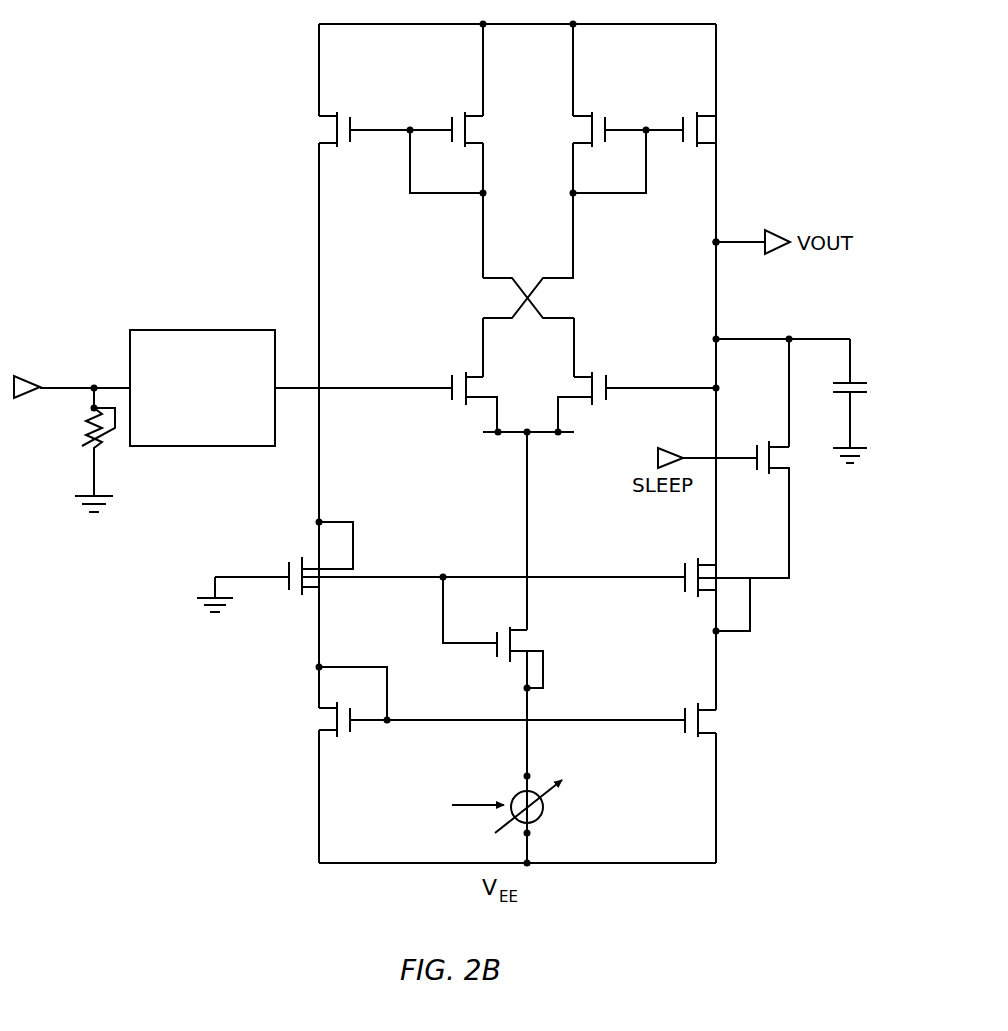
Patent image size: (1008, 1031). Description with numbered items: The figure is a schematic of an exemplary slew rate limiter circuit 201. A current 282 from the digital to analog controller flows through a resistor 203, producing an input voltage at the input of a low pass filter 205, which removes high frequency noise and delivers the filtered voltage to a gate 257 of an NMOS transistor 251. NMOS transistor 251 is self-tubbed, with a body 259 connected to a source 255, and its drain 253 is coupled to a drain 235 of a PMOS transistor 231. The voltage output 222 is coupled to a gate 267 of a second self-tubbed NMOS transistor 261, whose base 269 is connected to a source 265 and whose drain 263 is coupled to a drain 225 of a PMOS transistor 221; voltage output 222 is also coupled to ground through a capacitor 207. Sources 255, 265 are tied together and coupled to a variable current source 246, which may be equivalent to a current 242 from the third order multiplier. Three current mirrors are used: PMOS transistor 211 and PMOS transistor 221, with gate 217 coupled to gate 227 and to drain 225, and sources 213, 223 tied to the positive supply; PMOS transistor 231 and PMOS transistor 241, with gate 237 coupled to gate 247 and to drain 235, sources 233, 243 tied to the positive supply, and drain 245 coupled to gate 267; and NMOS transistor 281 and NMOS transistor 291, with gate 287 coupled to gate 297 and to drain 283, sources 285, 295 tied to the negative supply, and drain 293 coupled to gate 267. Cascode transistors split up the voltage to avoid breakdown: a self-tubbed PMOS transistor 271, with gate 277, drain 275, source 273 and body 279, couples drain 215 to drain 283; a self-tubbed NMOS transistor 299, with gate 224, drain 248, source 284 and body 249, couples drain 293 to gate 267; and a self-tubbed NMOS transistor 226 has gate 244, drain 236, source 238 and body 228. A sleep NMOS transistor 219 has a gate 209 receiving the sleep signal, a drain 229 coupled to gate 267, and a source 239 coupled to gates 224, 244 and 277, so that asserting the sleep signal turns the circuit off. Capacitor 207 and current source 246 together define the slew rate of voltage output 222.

The slew rate limiter circuit 201 is at (178, 178).
The resistor 203 is at (82, 446).
The low pass filter 205 is at (202, 388).
The capacitor 207 is at (862, 382).
The gate 209 is at (730, 460).
The PMOS transistor 211 is at (341, 132).
The source 213 is at (329, 114).
The drain 215 is at (336, 147).
The gate 217 is at (368, 128).
The NMOS transistor 219 is at (759, 487).
The PMOS transistor 221 is at (469, 132).
The voltage output 222 is at (742, 243).
The source 223 is at (476, 114).
The gate 224 is at (612, 575).
The drain 225 is at (466, 147).
The NMOS transistor 226 is at (509, 645).
The gate 227 is at (436, 128).
The body 228 is at (545, 666).
The drain 229 is at (776, 446).
The PMOS transistor 231 is at (588, 132).
The source 233 is at (582, 114).
The drain 235 is at (592, 147).
The drain 236 is at (519, 628).
The gate 237 is at (621, 128).
The source 238 is at (514, 662).
The source 239 is at (790, 470).
The PMOS transistor 241 is at (706, 132).
The current 242 is at (478, 805).
The source 243 is at (707, 114).
The gate 244 is at (484, 645).
The drain 245 is at (700, 148).
The variable current source 246 is at (525, 805).
The gate 247 is at (668, 128).
The drain 248 is at (685, 577).
The body 249 is at (752, 613).
The NMOS transistor 251 is at (463, 401).
The drain 253 is at (471, 373).
The source 255 is at (476, 405).
The gate 257 is at (408, 386).
The body 259 is at (500, 434).
The NMOS transistor 261 is at (595, 401).
The drain 263 is at (589, 373).
The source 265 is at (578, 405).
The gate 267 is at (667, 386).
The base 269 is at (556, 434).
The PMOS transistor 271 is at (320, 575).
The source 273 is at (310, 564).
The drain 275 is at (304, 598).
The gate 277 is at (392, 576).
The body 279 is at (355, 536).
The NMOS transistor 281 is at (398, 724).
The current 282 is at (55, 386).
The drain 283 is at (324, 704).
The source 284 is at (698, 598).
The source 285 is at (333, 740).
The gate 287 is at (404, 722).
The NMOS transistor 291 is at (646, 718).
The drain 293 is at (698, 704).
The source 295 is at (702, 740).
The gate 297 is at (610, 722).
The NMOS transistor 299 is at (712, 571).